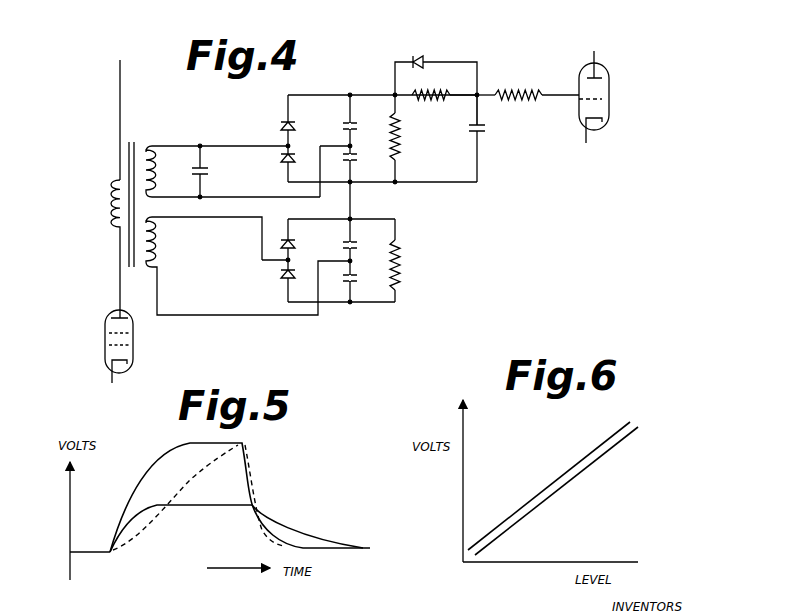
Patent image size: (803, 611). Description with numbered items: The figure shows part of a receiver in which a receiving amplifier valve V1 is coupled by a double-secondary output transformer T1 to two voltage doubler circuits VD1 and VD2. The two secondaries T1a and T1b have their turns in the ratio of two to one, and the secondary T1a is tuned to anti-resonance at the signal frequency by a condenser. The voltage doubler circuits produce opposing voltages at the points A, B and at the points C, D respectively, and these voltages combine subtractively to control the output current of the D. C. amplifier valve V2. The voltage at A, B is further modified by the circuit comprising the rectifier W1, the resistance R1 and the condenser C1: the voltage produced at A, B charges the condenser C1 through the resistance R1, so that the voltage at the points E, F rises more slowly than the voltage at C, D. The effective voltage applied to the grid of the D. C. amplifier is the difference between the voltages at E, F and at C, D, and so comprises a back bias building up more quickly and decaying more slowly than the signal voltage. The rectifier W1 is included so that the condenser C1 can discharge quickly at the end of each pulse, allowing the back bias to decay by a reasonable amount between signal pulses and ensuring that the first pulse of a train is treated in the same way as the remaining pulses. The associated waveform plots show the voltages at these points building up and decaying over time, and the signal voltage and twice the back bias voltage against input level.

In FIG. 4, the double-secondary output transformer T1 is at (127, 216).
In FIG. 4, the secondary T1a is at (155, 163).
In FIG. 4, the secondary T1b is at (167, 258).
In FIG. 4, the voltage doubler circuit VD1 is at (311, 187).
In FIG. 4, the voltage doubler circuit VD2 is at (338, 275).
In FIG. 4, the rectifier W1 is at (436, 66).
In FIG. 4, the resistance R1 is at (444, 106).
In FIG. 4, the condenser C1 is at (488, 115).
In FIG. 4, the receiving amplifier valve V1 is at (113, 337).
In FIG. 4, the D. C. amplifier valve V2 is at (563, 97).
In FIG. 4, the circuit point A is at (413, 130).
In FIG. 5, the circuit point A is at (167, 449).
In FIG. 6, the circuit point A is at (577, 479).
In FIG. 4, the circuit point B is at (413, 190).
In FIG. 5, the circuit point B is at (279, 519).
In FIG. 6, the circuit point B is at (568, 473).
In FIG. 4, the circuit point C is at (400, 252).
In FIG. 5, the circuit point C is at (207, 455).
In FIG. 4, the circuit point D is at (402, 302).
In FIG. 4, the circuit point E is at (485, 87).
In FIG. 4, the circuit point F is at (485, 161).